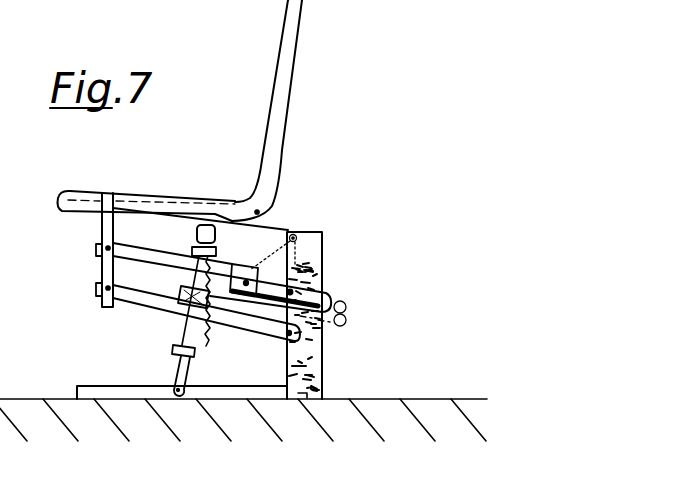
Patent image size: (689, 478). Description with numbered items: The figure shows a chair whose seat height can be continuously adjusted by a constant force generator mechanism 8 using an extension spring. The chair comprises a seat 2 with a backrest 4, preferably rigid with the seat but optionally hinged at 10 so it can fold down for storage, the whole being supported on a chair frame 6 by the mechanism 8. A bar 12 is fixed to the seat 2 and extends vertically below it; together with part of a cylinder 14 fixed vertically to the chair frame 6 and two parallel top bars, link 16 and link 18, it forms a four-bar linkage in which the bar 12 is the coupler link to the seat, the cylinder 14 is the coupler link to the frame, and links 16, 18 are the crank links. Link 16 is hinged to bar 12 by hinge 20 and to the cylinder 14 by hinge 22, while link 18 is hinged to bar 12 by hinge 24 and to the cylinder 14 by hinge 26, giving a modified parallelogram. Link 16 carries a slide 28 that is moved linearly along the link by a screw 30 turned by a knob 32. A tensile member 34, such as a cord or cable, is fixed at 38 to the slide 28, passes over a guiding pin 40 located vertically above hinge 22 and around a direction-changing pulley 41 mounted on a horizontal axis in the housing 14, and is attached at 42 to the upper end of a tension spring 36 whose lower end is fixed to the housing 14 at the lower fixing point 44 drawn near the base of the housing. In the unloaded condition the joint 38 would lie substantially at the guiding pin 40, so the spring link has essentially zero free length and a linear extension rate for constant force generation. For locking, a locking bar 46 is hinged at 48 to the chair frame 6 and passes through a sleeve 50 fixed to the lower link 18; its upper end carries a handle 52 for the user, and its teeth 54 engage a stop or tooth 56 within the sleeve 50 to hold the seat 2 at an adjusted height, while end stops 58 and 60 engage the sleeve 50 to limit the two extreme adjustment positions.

The seat 2 is at (186, 195).
The backrest 4 is at (291, 84).
The chair frame 6 is at (100, 386).
The constant force generator mechanism 8 is at (372, 228).
The hinge 10 is at (259, 211).
The bar 12 is at (102, 220).
The cylinder 14 is at (322, 347).
The link 16 is at (123, 243).
The link 18 is at (133, 303).
The hinge 20 is at (96, 251).
The hinge 22 is at (300, 272).
The hinge 24 is at (96, 294).
The hinge 26 is at (287, 334).
The slide 28 is at (230, 274).
The screw 30 is at (283, 301).
The knob 32 is at (347, 305).
The tensile member 34 is at (290, 236).
The tension spring 36 is at (322, 367).
The fixing point 38 is at (246, 266).
The guiding pin 40 is at (296, 235).
The pulley 41 is at (300, 237).
The attachment point 42 is at (340, 248).
The stop 44 is at (309, 391).
The locking bar 46 is at (178, 363).
The hinge 48 is at (185, 374).
The sleeve 50 is at (182, 292).
The handle 52 is at (213, 226).
The teeth 54 is at (197, 329).
The stop 56 is at (210, 293).
The end stop 58 is at (178, 341).
The end stop 60 is at (197, 247).